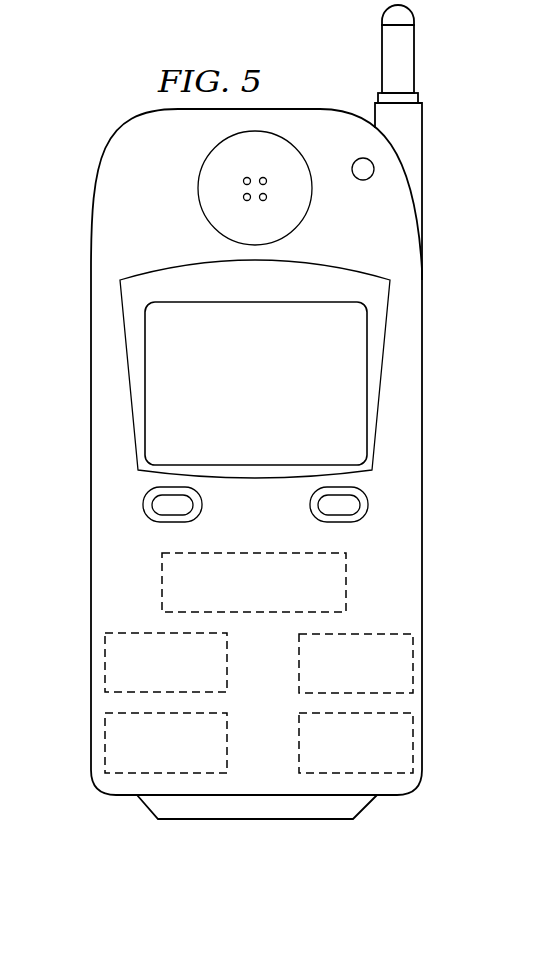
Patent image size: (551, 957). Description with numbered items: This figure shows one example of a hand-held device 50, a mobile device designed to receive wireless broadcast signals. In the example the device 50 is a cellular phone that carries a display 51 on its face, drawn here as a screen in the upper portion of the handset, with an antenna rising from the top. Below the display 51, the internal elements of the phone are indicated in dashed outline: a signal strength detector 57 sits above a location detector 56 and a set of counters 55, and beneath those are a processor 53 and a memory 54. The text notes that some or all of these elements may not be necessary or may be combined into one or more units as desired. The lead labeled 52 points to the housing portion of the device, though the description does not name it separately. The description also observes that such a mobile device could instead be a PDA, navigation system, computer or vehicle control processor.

The hand-held device 50 is at (319, 100).
The display 51 is at (244, 395).
The housing 52 is at (110, 553).
The processor 53 is at (227, 754).
The memory 54 is at (299, 733).
The counters 55 is at (299, 653).
The location detector 56 is at (227, 674).
The signal strength detector 57 is at (346, 574).